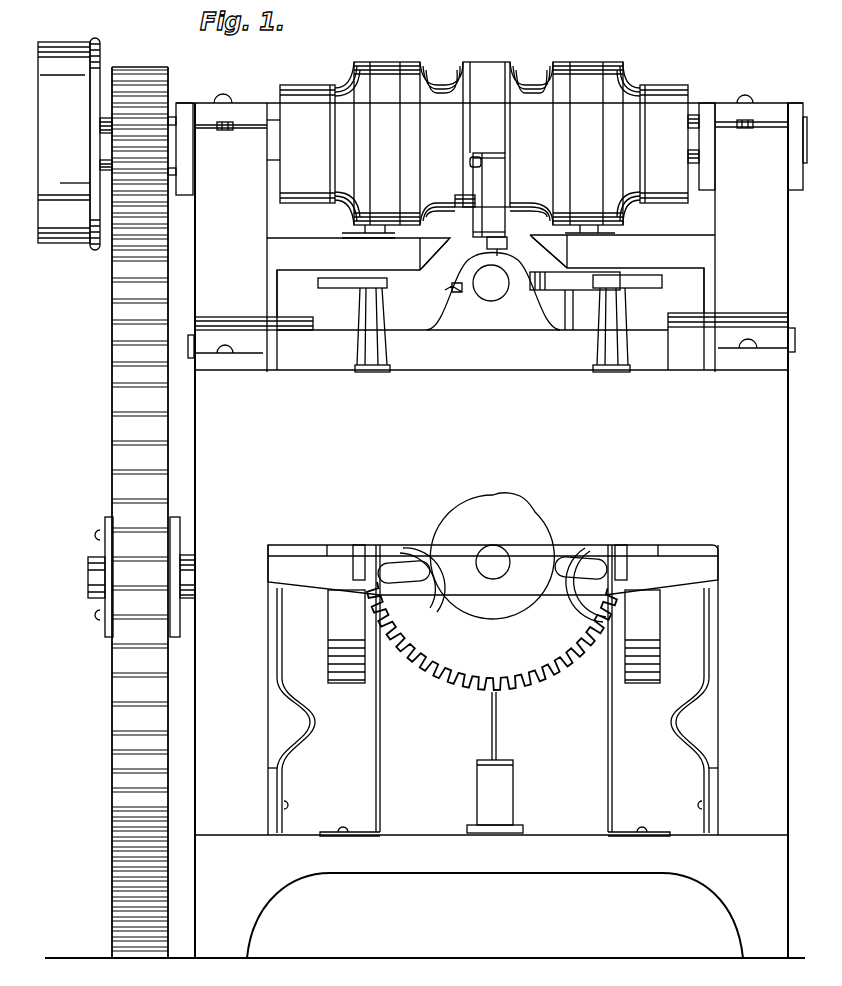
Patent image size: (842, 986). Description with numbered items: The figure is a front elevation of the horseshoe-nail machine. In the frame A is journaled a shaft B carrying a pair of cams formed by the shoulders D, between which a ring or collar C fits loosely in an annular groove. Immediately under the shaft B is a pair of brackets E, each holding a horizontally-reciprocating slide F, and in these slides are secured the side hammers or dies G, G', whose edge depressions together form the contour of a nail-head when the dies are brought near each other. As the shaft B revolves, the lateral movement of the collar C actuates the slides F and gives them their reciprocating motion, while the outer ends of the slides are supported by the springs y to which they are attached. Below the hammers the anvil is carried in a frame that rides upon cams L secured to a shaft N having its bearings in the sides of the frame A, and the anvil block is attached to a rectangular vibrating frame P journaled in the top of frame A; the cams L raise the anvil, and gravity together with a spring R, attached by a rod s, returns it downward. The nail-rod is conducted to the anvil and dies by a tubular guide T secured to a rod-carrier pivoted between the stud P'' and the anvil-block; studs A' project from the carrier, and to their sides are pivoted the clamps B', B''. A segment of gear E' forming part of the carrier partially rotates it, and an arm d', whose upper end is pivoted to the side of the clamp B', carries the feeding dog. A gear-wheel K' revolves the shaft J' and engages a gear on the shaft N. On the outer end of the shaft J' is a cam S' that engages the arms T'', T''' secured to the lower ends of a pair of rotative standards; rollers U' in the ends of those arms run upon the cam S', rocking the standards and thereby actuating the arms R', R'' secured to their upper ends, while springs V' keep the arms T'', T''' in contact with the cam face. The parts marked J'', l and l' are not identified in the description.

The frame A is at (489, 526).
The shaft B is at (488, 136).
The ring or collar C is at (482, 150).
The shoulders D is at (483, 143).
The side hammer or die G is at (531, 217).
The side hammer or die G' is at (437, 217).
The clamp B' is at (489, 195).
The arm d' is at (470, 171).
The stud A' is at (513, 262).
The guide T is at (497, 246).
The bracket E is at (491, 276).
The slide F is at (492, 252).
The segment of gear E' is at (447, 282).
The rails l is at (491, 327).
The rectangular vibrating frame P is at (490, 319).
The stud P'' is at (493, 292).
The arm R' is at (352, 288).
The arm R'' is at (627, 287).
The pedestals l' is at (492, 330).
The clamp B'' is at (575, 281).
The cam S' is at (492, 556).
The shaft J' is at (493, 562).
The gear wheel J'' is at (109, 498).
The shaft N is at (186, 571).
The gear-wheel K' is at (492, 636).
The arm T'' is at (403, 572).
The arm T''' is at (580, 568).
The roller U' is at (503, 585).
The cam L is at (494, 636).
The spring V' is at (495, 690).
The spring y is at (493, 710).
The rod s is at (497, 726).
The spring R is at (495, 796).